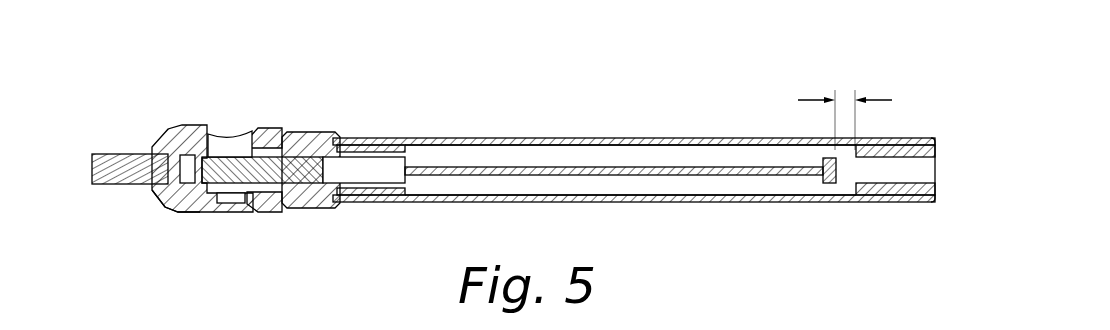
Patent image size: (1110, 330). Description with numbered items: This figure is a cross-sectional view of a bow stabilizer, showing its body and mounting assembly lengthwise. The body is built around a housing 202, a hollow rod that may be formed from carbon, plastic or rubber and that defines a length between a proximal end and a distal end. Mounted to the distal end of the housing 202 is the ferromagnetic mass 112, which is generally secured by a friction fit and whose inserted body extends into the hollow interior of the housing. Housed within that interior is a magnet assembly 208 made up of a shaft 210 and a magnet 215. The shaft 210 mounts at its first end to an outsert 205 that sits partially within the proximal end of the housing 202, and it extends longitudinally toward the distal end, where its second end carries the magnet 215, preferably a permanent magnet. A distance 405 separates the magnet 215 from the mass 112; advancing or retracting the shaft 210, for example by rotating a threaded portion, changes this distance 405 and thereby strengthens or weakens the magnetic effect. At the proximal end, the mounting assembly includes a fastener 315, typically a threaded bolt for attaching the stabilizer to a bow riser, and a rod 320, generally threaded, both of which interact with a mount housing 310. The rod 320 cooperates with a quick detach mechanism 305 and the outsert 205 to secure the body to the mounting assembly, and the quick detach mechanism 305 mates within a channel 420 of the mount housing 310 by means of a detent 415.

The ferromagnetic mass 112 is at (936, 140).
The housing 202 is at (582, 138).
The outsert 205 is at (320, 131).
The magnet assembly 208 is at (659, 198).
The shaft 210 is at (755, 176).
The magnet 215 is at (833, 184).
The quick detach mechanism 305 is at (228, 135).
The mount housing 310 is at (167, 131).
The fastener 315 is at (94, 153).
The rod 320 is at (270, 213).
The distance 405 is at (822, 120).
The detent 415 is at (191, 207).
The channel 420 is at (231, 214).